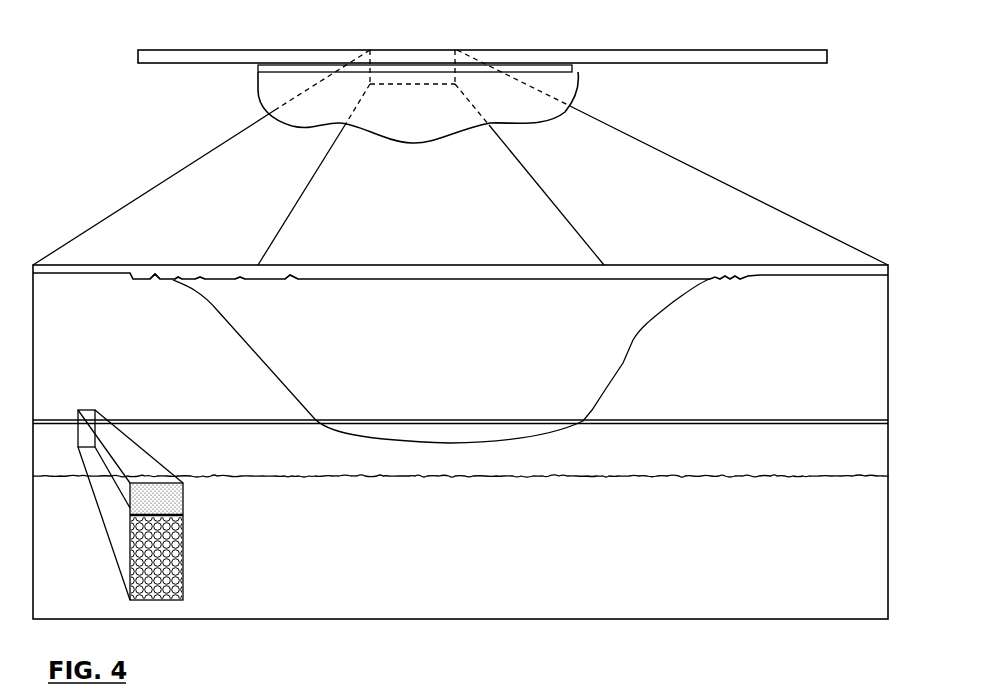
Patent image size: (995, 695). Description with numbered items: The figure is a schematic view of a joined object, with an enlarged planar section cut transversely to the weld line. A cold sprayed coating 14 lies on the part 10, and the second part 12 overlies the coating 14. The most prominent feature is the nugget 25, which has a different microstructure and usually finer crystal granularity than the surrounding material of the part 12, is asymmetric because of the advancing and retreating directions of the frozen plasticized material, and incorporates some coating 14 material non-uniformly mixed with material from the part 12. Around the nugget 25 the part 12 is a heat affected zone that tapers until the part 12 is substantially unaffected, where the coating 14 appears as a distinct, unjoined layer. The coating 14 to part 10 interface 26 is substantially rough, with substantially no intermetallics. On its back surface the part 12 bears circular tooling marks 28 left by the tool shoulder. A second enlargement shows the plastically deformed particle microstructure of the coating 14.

The part 10 is at (520, 115).
The second part 12 is at (625, 58).
The coating 14 is at (278, 68).
The nugget 25 is at (440, 339).
The interface 26 is at (325, 470).
The circular tooling marks 28 is at (183, 274).